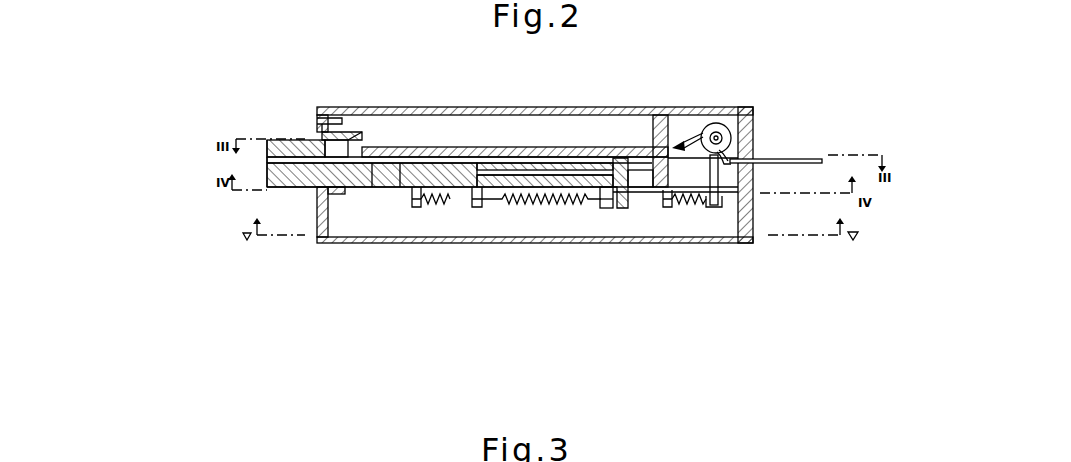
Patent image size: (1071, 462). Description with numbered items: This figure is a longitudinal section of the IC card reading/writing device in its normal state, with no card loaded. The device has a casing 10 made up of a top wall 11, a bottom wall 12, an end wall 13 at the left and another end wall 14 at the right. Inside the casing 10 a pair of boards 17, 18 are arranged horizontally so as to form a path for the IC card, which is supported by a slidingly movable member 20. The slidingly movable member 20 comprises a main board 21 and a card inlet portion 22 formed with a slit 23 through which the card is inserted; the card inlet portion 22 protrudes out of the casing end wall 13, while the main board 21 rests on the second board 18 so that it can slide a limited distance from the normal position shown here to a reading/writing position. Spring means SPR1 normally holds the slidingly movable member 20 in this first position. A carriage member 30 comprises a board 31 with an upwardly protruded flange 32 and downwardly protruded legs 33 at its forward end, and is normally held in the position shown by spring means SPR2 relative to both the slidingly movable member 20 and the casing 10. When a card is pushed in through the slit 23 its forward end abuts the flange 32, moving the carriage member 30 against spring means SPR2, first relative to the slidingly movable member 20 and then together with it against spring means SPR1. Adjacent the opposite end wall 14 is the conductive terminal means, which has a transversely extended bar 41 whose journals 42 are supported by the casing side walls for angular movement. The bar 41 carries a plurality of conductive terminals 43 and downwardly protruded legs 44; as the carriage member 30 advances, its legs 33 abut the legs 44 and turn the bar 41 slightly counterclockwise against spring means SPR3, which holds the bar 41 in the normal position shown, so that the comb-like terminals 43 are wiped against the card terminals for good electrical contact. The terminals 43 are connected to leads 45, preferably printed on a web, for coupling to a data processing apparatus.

The casing 10 is at (535, 102).
The top wall 11 is at (620, 113).
The bottom wall 12 is at (612, 241).
The end wall 13 is at (321, 223).
The end wall 14 is at (754, 219).
The board 17 is at (466, 150).
The board 18 is at (406, 178).
The slidingly movable member 20 is at (283, 194).
The main board 21 is at (377, 174).
The card inlet portion 22 is at (292, 141).
The slit 23 is at (262, 158).
The carriage member 30 is at (554, 168).
The board 31 is at (581, 188).
The upwardly protruded flange 32 is at (660, 130).
The downwardly protruded legs 33 is at (626, 200).
The transversely extended bar 41 is at (735, 142).
The journals 42 is at (730, 134).
The conductive terminals 43 is at (693, 131).
The downwardly protruded legs 44 is at (720, 204).
The leads 45 is at (797, 158).
The spring means SPR1 is at (438, 206).
The spring means SPR2 is at (536, 206).
The spring means SPR3 is at (687, 207).